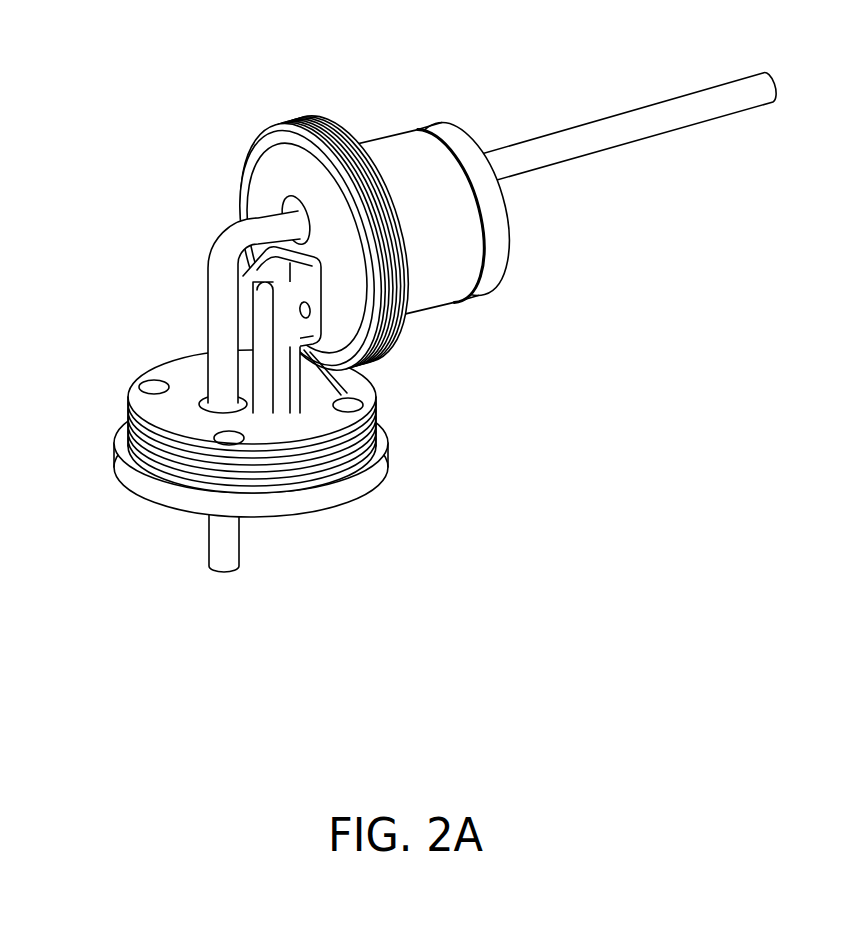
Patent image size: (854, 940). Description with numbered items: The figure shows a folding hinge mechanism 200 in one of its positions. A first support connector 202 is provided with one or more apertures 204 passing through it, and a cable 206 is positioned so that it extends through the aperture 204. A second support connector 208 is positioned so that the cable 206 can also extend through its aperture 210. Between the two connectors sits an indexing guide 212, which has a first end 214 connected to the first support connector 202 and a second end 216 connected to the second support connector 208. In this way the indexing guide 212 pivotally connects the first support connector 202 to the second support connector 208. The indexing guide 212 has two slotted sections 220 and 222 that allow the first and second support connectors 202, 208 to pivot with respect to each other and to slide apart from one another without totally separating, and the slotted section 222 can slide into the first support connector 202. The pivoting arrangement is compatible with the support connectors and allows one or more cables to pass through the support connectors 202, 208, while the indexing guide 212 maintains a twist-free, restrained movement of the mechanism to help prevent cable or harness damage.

The folding hinge mechanism 200 is at (62, 136).
The first support connector 202 is at (460, 252).
The aperture 204 is at (283, 207).
The cable 206 is at (590, 138).
The second support connector 208 is at (372, 478).
The aperture 210 is at (155, 387).
The indexing guide 212 is at (265, 347).
The first end 214 is at (225, 219).
The second end 216 is at (292, 398).
The slotted section 220 is at (312, 311).
The slotted section 222 is at (262, 403).